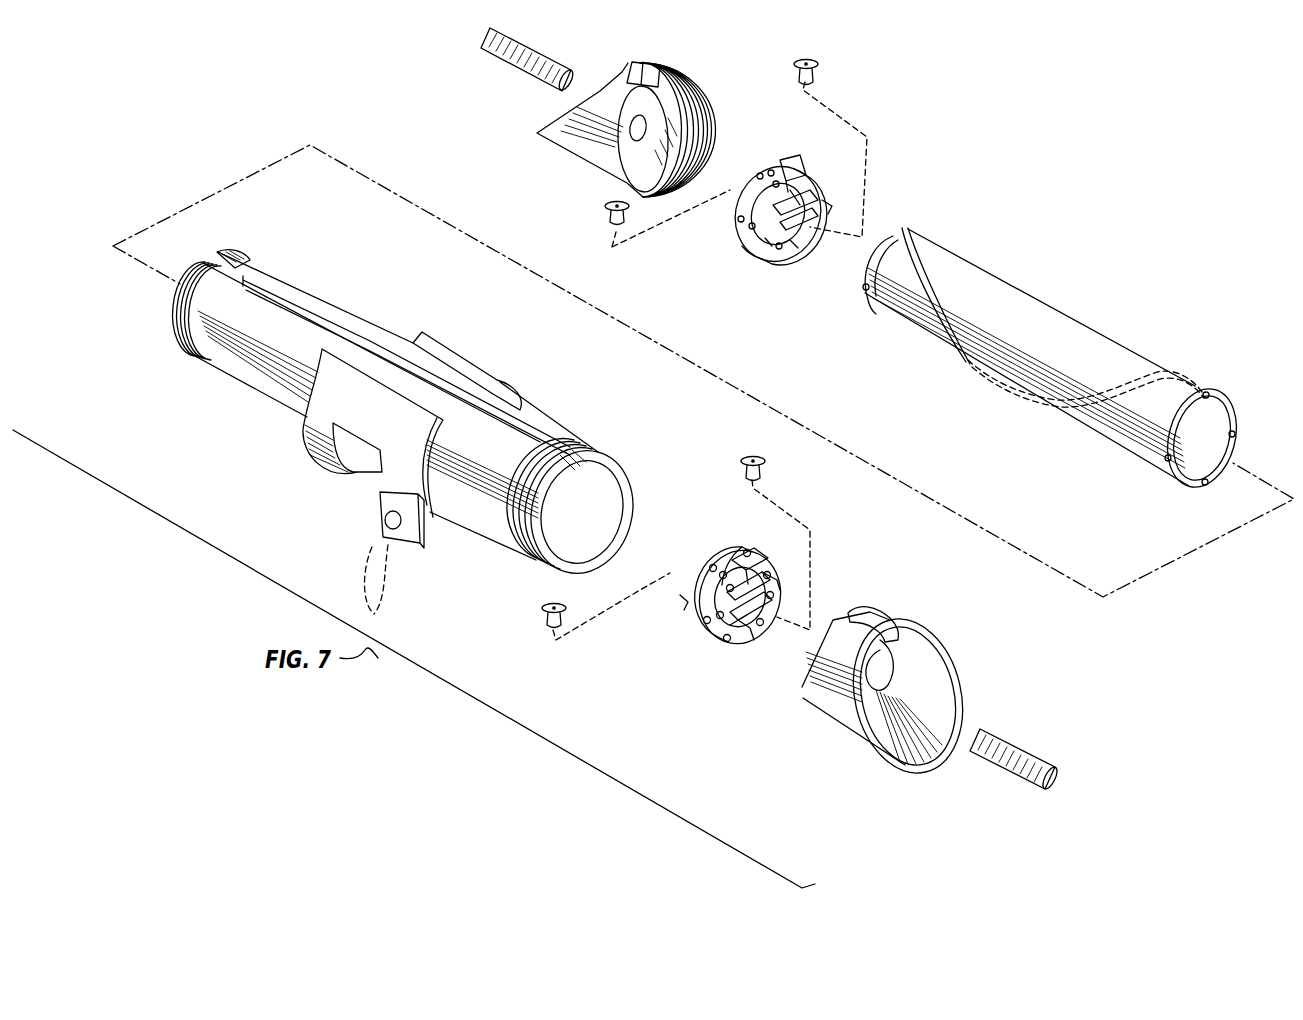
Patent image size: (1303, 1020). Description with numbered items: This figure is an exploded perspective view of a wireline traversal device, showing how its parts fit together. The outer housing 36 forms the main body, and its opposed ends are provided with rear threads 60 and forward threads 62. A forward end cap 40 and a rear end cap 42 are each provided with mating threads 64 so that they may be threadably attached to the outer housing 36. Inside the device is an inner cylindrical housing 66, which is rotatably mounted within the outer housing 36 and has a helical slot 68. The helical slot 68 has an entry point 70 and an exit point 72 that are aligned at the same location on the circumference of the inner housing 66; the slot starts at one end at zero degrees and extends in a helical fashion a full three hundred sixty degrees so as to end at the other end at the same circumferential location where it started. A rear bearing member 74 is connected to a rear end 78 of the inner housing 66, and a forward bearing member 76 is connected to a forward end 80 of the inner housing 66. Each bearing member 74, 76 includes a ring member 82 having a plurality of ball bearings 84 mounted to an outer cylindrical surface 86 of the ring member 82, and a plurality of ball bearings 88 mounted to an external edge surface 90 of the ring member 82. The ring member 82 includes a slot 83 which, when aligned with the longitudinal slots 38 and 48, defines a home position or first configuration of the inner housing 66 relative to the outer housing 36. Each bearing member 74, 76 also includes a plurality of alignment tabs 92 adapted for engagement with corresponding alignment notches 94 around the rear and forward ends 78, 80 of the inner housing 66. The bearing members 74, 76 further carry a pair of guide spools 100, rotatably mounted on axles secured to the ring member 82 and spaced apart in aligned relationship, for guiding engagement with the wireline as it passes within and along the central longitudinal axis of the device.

The outer housing 36 is at (228, 378).
The longitudinal slot 38 is at (307, 310).
The forward end cap 40 is at (852, 720).
The rear end cap 42 is at (583, 150).
The longitudinal slot 48 is at (635, 70).
The rear threads 60 is at (178, 315).
The forward threads 62 is at (546, 560).
The mating threads 64 is at (706, 103).
The inner cylindrical housing 66 is at (1080, 325).
The helical slot 68 is at (933, 292).
The entry point 70 is at (1228, 420).
The exit point 72 is at (906, 232).
The rear bearing member 74 is at (865, 116).
The forward bearing member 76 is at (810, 522).
The rear end 78 is at (866, 305).
The forward end 80 is at (1162, 470).
The ring member 82 is at (818, 192).
The slot 83 is at (735, 560).
The ball bearings 84 is at (768, 183).
The outer cylindrical surface 86 is at (742, 246).
The ball bearings 88 is at (768, 582).
The external edge surface 90 is at (742, 640).
The alignment tabs 92 is at (828, 206).
The alignment notches 94 is at (865, 285).
The guide spools 100 is at (606, 224).